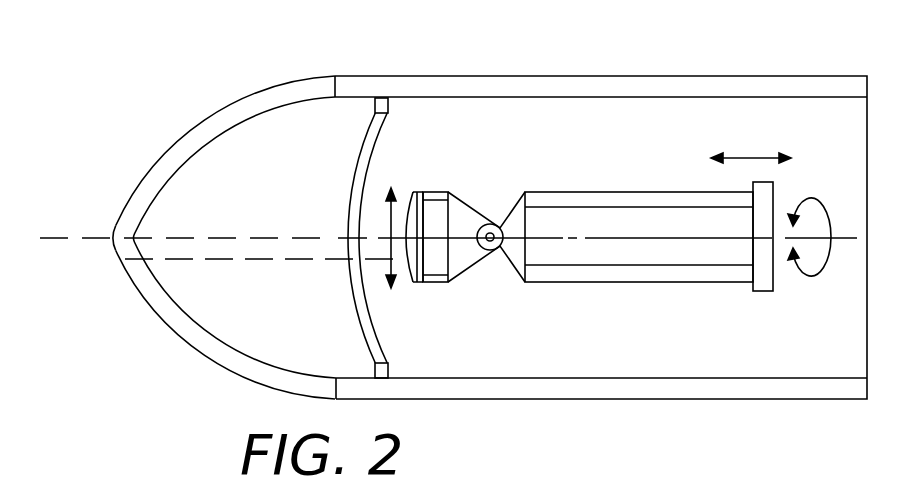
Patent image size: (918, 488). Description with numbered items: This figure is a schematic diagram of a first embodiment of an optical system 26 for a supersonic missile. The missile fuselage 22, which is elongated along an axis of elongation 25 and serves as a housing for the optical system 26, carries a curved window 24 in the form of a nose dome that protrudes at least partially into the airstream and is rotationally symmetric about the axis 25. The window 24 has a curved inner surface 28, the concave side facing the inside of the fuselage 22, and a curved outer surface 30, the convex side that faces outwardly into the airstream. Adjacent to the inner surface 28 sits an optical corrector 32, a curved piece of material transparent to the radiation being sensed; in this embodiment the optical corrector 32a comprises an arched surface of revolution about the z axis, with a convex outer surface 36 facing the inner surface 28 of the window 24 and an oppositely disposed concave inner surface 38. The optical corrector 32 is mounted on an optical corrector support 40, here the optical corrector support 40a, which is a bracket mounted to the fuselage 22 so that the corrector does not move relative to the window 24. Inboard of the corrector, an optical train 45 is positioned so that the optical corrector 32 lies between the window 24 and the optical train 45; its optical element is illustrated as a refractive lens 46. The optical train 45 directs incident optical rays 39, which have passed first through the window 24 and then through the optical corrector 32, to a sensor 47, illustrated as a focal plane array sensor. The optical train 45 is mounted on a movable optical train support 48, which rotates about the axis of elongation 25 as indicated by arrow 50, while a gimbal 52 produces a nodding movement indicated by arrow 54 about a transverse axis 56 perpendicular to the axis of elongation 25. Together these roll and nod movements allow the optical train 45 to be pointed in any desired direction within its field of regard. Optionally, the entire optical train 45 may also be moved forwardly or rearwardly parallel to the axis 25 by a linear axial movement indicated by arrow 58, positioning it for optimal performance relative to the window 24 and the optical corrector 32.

The fuselage 22 is at (575, 76).
The curved window 24 is at (173, 155).
The axis of elongation 25 is at (55, 242).
The optical system 26 is at (206, 202).
The curved inner surface 28 is at (170, 182).
The curved outer surface 30 is at (135, 192).
The optical corrector 32 is at (367, 238).
The optical corrector 32a is at (361, 162).
The convex outer surface 36 is at (363, 329).
The concave inner surface 38 is at (376, 326).
The incident optical rays 39 is at (213, 261).
The optical corrector support 40 is at (377, 103).
The optical corrector support 40a is at (377, 372).
The optical train 45 is at (446, 222).
The refractive lens 46 is at (410, 273).
The sensor 47 is at (445, 258).
The optical train support 48 is at (607, 192).
The arrow 50 is at (822, 268).
The gimbal 52 is at (501, 211).
The arrow 54 is at (390, 218).
The transverse axis 56 is at (492, 236).
The arrow 58 is at (757, 157).